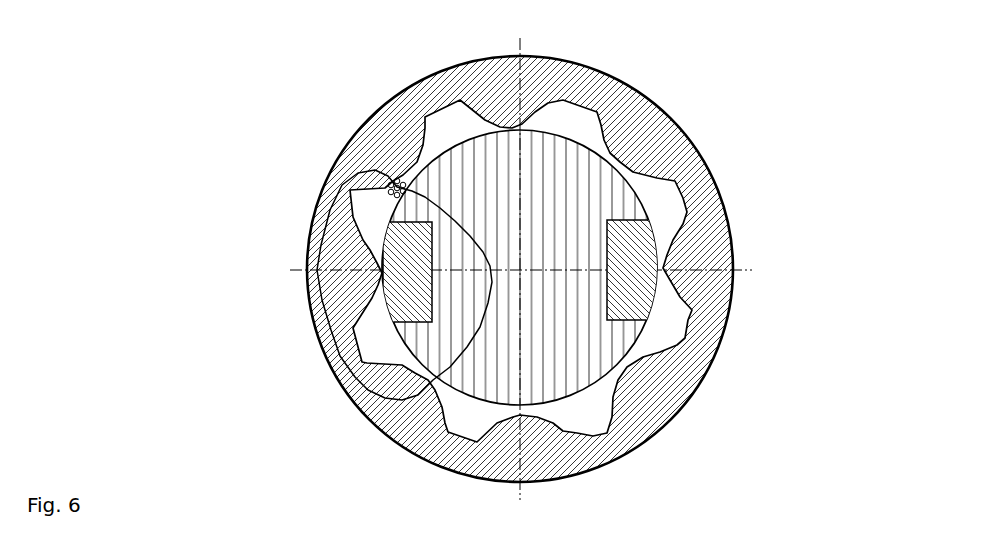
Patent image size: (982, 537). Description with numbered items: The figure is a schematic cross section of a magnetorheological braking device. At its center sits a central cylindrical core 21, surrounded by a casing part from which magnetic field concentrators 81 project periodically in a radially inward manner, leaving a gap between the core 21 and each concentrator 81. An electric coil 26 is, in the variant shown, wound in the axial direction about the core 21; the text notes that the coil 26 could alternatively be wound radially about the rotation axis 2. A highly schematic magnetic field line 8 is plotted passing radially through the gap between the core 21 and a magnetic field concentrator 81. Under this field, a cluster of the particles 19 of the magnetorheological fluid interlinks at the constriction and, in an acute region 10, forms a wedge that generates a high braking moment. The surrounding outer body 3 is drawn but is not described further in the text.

The rotation axis 2 is at (652, 202).
The housing 3 is at (705, 398).
The magnetic field line 8 is at (345, 187).
The acute region 10 is at (378, 194).
The particles 19 is at (395, 188).
The central cylindrical core 21 is at (537, 190).
The electric coil 26 is at (402, 252).
The magnetic field concentrators 81 is at (632, 152).